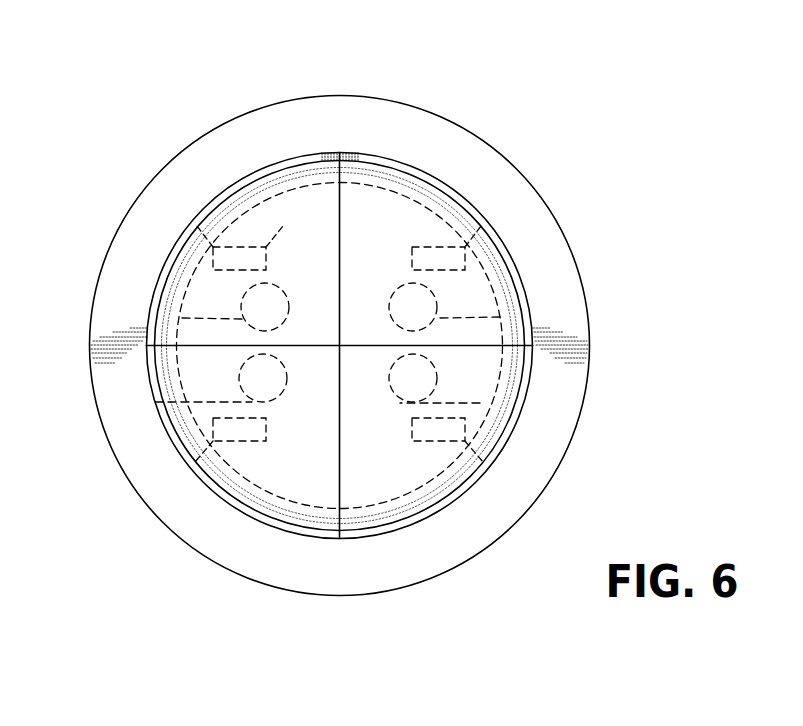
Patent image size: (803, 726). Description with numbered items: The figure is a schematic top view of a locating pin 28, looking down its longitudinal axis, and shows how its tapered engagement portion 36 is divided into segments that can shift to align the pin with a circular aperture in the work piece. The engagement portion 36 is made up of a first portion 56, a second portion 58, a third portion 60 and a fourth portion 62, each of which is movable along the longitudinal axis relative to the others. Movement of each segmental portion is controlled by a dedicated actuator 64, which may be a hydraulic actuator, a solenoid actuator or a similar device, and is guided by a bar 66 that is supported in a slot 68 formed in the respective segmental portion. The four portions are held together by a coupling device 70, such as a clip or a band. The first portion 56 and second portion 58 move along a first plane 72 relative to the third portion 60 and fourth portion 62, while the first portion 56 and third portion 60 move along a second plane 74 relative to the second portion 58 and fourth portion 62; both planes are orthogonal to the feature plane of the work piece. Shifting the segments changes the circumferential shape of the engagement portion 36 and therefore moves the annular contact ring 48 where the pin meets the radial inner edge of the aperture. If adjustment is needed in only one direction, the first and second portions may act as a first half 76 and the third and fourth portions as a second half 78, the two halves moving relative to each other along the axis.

The locating pin 28 is at (577, 148).
The engagement portion 36 is at (427, 243).
The annular contact ring 48 is at (254, 230).
The first portion 56 is at (247, 253).
The second portion 58 is at (463, 288).
The third portion 60 is at (282, 443).
The fourth portion 62 is at (413, 445).
The actuator 64 is at (182, 318).
The bar 66 is at (218, 247).
The slot 68 is at (247, 246).
The coupling device 70 is at (363, 215).
The first plane 72 is at (355, 348).
The second plane 74 is at (340, 329).
The first half 76 is at (293, 218).
The second half 78 is at (313, 443).